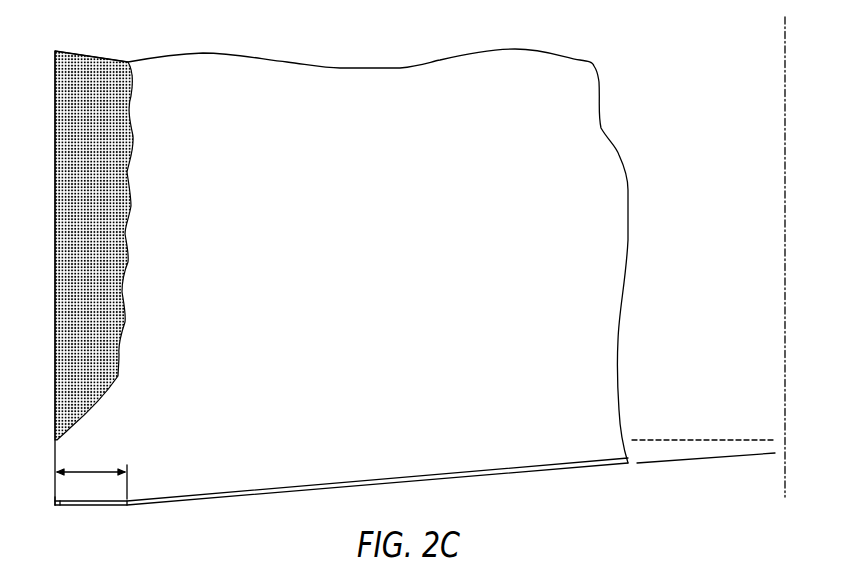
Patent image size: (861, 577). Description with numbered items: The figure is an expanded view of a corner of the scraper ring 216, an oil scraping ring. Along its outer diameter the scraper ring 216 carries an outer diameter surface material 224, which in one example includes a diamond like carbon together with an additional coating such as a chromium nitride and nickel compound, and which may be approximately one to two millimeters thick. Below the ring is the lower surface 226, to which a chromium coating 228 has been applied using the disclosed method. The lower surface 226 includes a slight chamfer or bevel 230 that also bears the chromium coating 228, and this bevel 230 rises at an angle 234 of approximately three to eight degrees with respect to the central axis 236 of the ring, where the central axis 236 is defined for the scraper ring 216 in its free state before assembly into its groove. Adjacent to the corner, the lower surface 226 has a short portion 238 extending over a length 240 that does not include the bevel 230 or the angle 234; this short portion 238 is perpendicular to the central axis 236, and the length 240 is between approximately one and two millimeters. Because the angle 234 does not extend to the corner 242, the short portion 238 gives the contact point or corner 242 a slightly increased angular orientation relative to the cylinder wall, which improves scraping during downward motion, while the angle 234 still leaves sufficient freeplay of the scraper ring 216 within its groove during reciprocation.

The scraper ring 216 is at (580, 223).
The outer diameter surface material 224 is at (100, 87).
The lower surface 226 is at (207, 485).
The chromium coating 228 is at (110, 507).
The bevel 230 is at (531, 483).
The angle 234 is at (675, 492).
The central axis 236 is at (783, 62).
The short portion 238 is at (80, 507).
The length 240 is at (97, 468).
The corner 242 is at (50, 506).